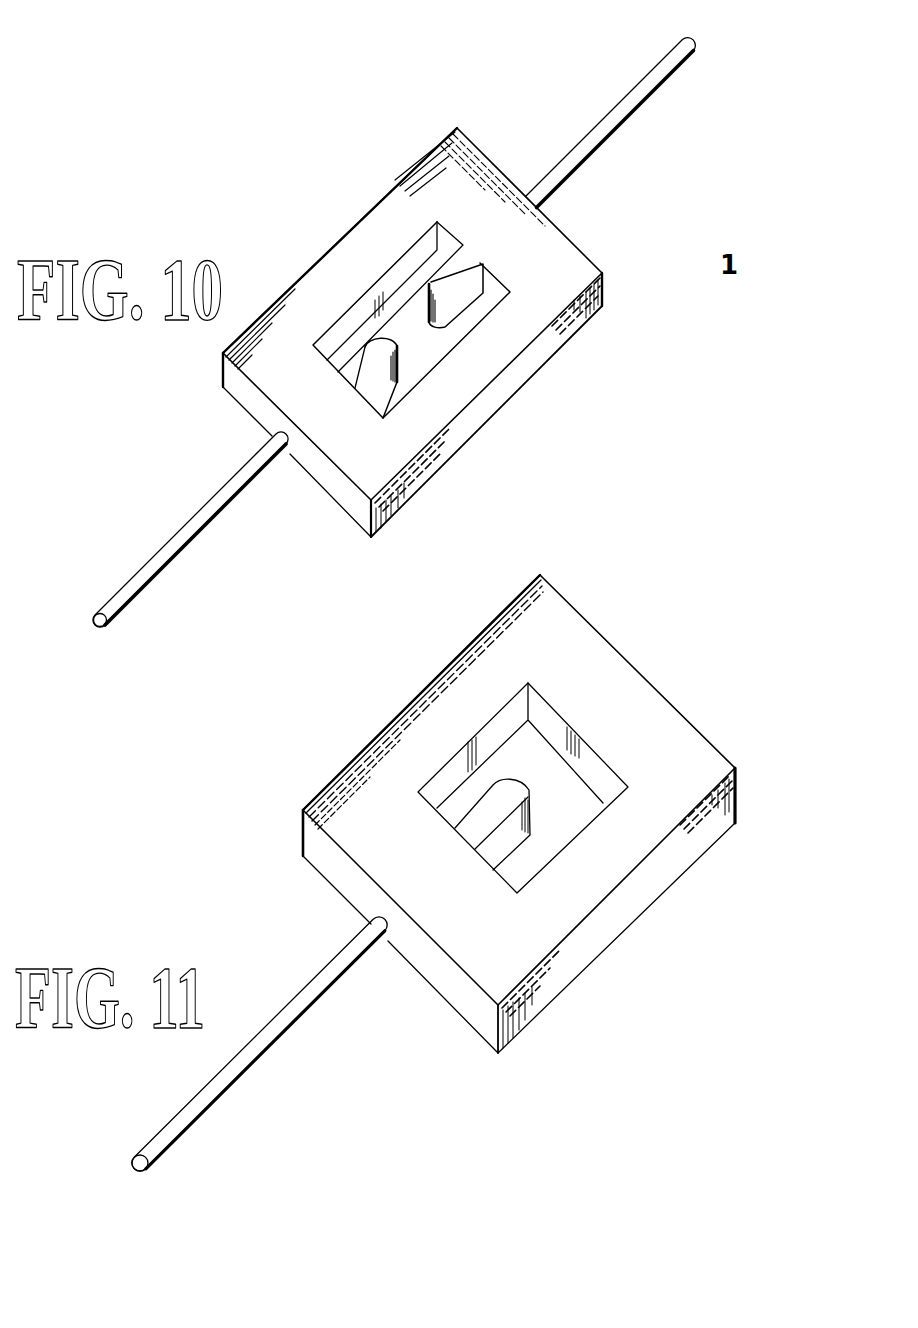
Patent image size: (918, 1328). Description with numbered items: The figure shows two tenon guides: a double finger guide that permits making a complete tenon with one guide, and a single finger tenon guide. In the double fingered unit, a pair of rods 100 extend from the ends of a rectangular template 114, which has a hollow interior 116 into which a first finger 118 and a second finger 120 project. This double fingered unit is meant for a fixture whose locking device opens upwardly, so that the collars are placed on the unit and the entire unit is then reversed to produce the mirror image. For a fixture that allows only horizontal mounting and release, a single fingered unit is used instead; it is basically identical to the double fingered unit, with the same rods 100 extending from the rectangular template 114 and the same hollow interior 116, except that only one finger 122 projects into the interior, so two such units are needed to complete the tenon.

In FIG. 10, the rods 100 is at (678, 129).
In FIG. 11, the rods 100 is at (343, 1072).
In FIG. 10, the rectangular template 114 is at (567, 265).
In FIG. 11, the rectangular template 114 is at (738, 802).
In FIG. 10, the hollow interior 116 is at (583, 360).
In FIG. 11, the hollow interior 116 is at (574, 792).
In FIG. 10, the finger 118 is at (449, 272).
In FIG. 10, the finger 120 is at (537, 413).
In FIG. 11, the finger 122 is at (690, 898).